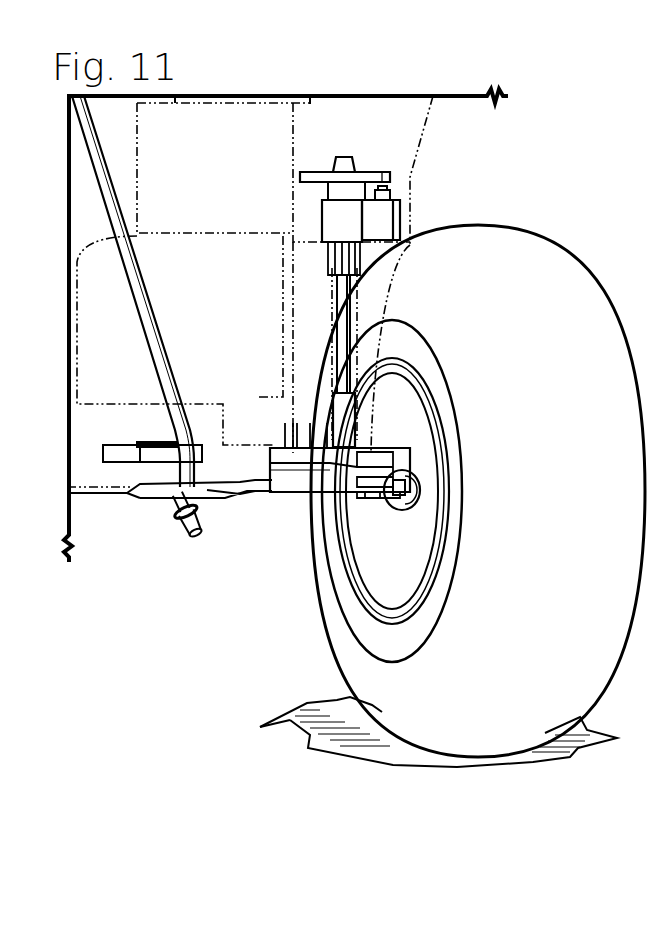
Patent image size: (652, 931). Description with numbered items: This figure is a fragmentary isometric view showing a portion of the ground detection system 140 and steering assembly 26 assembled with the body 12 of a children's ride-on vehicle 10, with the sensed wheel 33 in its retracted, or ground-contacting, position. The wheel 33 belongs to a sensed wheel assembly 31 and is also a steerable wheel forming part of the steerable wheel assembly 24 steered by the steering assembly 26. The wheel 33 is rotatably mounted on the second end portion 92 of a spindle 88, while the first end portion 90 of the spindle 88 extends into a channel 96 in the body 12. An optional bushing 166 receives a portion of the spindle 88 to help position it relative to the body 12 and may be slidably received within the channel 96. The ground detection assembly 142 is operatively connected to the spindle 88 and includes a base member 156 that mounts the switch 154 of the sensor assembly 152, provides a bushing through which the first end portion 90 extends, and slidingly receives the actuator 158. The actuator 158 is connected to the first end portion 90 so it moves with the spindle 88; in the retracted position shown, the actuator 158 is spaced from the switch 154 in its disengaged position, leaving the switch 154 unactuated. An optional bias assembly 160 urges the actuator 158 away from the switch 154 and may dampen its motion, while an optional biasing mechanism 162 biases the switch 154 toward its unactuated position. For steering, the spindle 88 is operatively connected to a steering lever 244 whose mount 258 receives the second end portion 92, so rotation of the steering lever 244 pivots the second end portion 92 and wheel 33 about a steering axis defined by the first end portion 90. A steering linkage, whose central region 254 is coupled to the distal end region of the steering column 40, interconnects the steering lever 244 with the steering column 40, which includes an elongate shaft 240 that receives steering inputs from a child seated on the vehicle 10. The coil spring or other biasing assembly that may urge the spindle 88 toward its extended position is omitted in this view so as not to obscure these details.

The ride-on vehicle 10 is at (541, 151).
The body 12 is at (422, 136).
The steerable wheel assembly 24 is at (478, 458).
The steering assembly 26 is at (167, 306).
The sensed wheel assembly 31 is at (547, 234).
The sensed wheel 33 is at (568, 258).
The steering column 40 is at (179, 359).
The spindle 88 is at (334, 323).
The first end portion 90 is at (338, 283).
The second end portion 92 is at (398, 500).
The channel 96 is at (343, 318).
The ground detection system 140 is at (240, 149).
The ground detection assembly 142 is at (262, 171).
The sensor assembly 152 is at (349, 195).
The switch 154 is at (398, 202).
The base member 156 is at (322, 211).
The actuator 158 is at (320, 172).
The bias assembly 160 is at (347, 195).
The biasing mechanism 162 is at (391, 193).
The bushing 166 is at (353, 411).
The elongate shaft 240 is at (182, 505).
The steering lever 244 is at (298, 472).
The central region 254 is at (153, 496).
The mount 258 is at (362, 494).